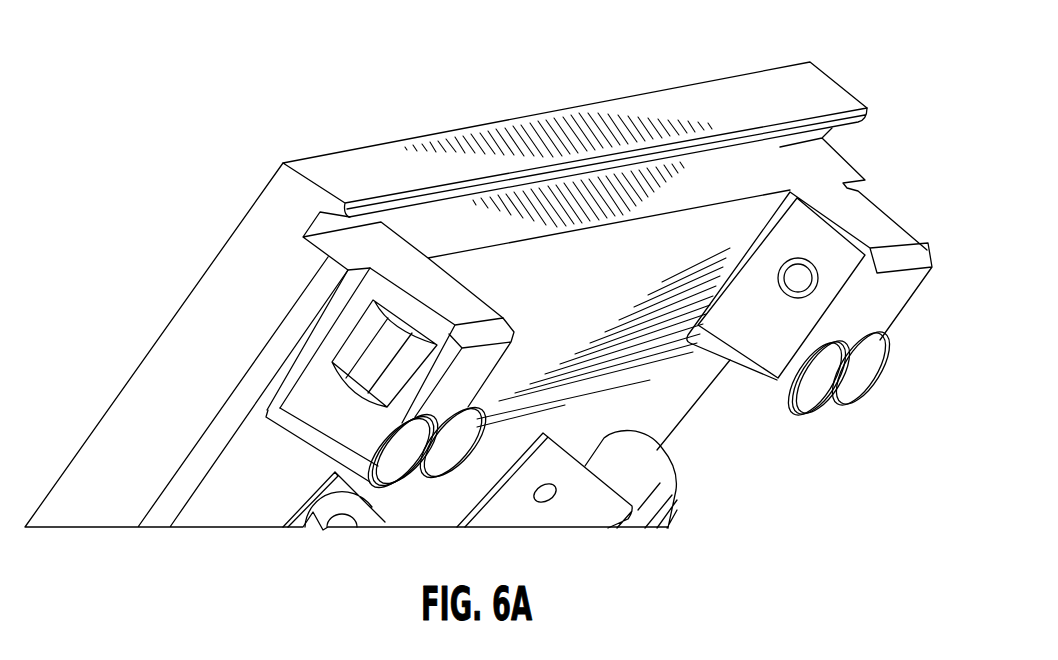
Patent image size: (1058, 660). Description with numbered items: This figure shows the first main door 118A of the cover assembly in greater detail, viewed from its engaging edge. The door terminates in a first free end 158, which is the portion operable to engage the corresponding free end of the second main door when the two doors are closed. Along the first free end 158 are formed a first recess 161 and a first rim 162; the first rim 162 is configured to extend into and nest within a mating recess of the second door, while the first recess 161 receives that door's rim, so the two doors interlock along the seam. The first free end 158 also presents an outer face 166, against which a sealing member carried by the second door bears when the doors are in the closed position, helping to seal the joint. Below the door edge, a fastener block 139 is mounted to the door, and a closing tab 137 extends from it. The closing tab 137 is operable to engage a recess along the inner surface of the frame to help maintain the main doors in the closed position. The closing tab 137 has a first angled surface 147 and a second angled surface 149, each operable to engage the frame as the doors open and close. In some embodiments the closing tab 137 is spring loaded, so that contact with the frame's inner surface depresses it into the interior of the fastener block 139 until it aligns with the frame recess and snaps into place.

The first main door 118A is at (368, 108).
The first free end 158 is at (822, 76).
The outer face 166 is at (662, 110).
The first rim 162 is at (853, 120).
The first recess 161 is at (310, 232).
The closing tab 137 is at (318, 370).
The first angled surface 147 is at (355, 347).
The fastener block 139 is at (305, 420).
The second angled surface 149 is at (303, 420).